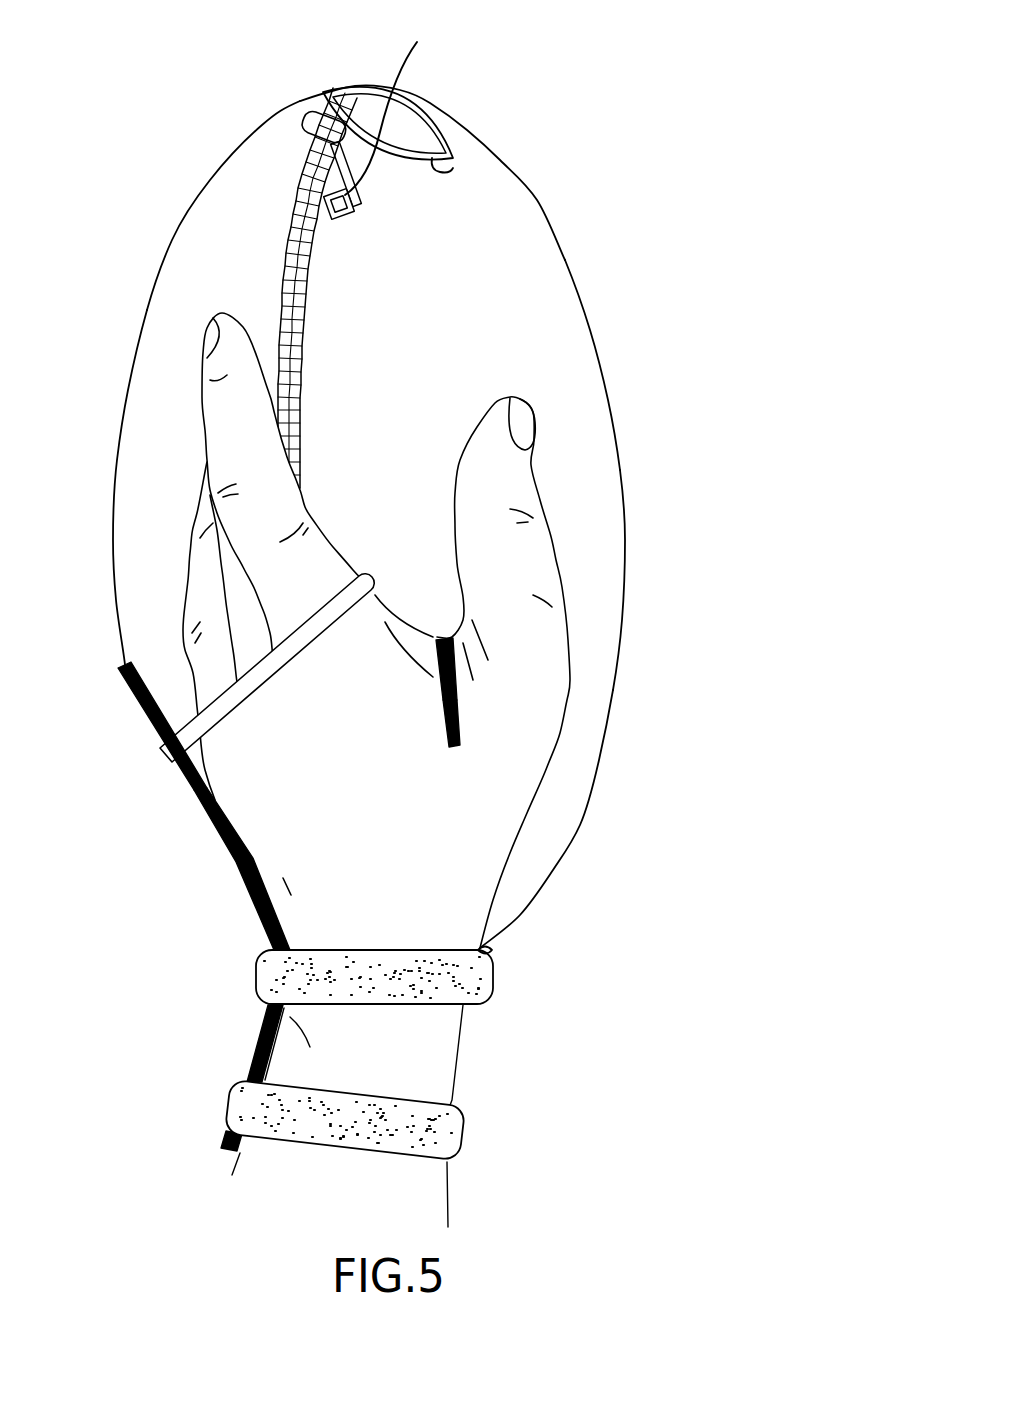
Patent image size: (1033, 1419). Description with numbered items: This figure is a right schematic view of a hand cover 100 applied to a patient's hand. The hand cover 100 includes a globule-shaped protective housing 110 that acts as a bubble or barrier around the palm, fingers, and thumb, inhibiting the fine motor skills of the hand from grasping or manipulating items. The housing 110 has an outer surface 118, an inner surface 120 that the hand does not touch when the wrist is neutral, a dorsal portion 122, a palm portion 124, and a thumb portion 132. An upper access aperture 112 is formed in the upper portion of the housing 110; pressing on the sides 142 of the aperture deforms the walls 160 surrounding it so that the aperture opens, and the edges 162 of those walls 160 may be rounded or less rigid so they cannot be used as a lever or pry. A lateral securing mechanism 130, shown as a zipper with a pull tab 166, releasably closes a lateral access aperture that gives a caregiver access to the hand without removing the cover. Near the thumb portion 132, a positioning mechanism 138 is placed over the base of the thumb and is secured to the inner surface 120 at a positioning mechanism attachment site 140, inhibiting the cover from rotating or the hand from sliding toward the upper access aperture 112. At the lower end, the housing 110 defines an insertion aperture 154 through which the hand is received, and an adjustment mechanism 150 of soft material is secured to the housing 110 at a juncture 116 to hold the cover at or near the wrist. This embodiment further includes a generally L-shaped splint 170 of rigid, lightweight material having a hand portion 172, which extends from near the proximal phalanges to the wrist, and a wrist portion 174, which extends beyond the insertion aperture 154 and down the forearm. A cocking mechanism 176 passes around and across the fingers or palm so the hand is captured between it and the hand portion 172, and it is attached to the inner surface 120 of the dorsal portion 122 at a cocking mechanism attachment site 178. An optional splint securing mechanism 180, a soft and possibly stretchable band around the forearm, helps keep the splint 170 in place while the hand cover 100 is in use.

The hand cover 100 is at (385, 617).
The protective housing 110 is at (210, 180).
The upper access aperture 112 is at (368, 102).
The juncture 116 is at (490, 952).
The outer surface 118 is at (607, 655).
The inner surface 120 is at (427, 131).
The dorsal portion 122 is at (147, 367).
The palm portion 124 is at (597, 413).
The lateral securing mechanism 130 is at (300, 170).
The thumb portion 132 is at (430, 827).
The positioning mechanism 138 is at (460, 693).
The positioning mechanism attachment site 140 is at (460, 747).
The sides of the upper access aperture 142 is at (445, 172).
The adjustment mechanism 150 is at (478, 983).
The insertion aperture 154 is at (427, 1005).
The walls 160 is at (430, 200).
The edges 162 is at (300, 123).
The pull tab 166 is at (397, 108).
The splint 170 is at (247, 880).
The hand portion 172 is at (193, 793).
The wrist portion 174 is at (257, 1043).
The cocking mechanism 176 is at (220, 690).
The cocking mechanism attachment site 178 is at (183, 737).
The splint securing mechanism 180 is at (462, 1118).